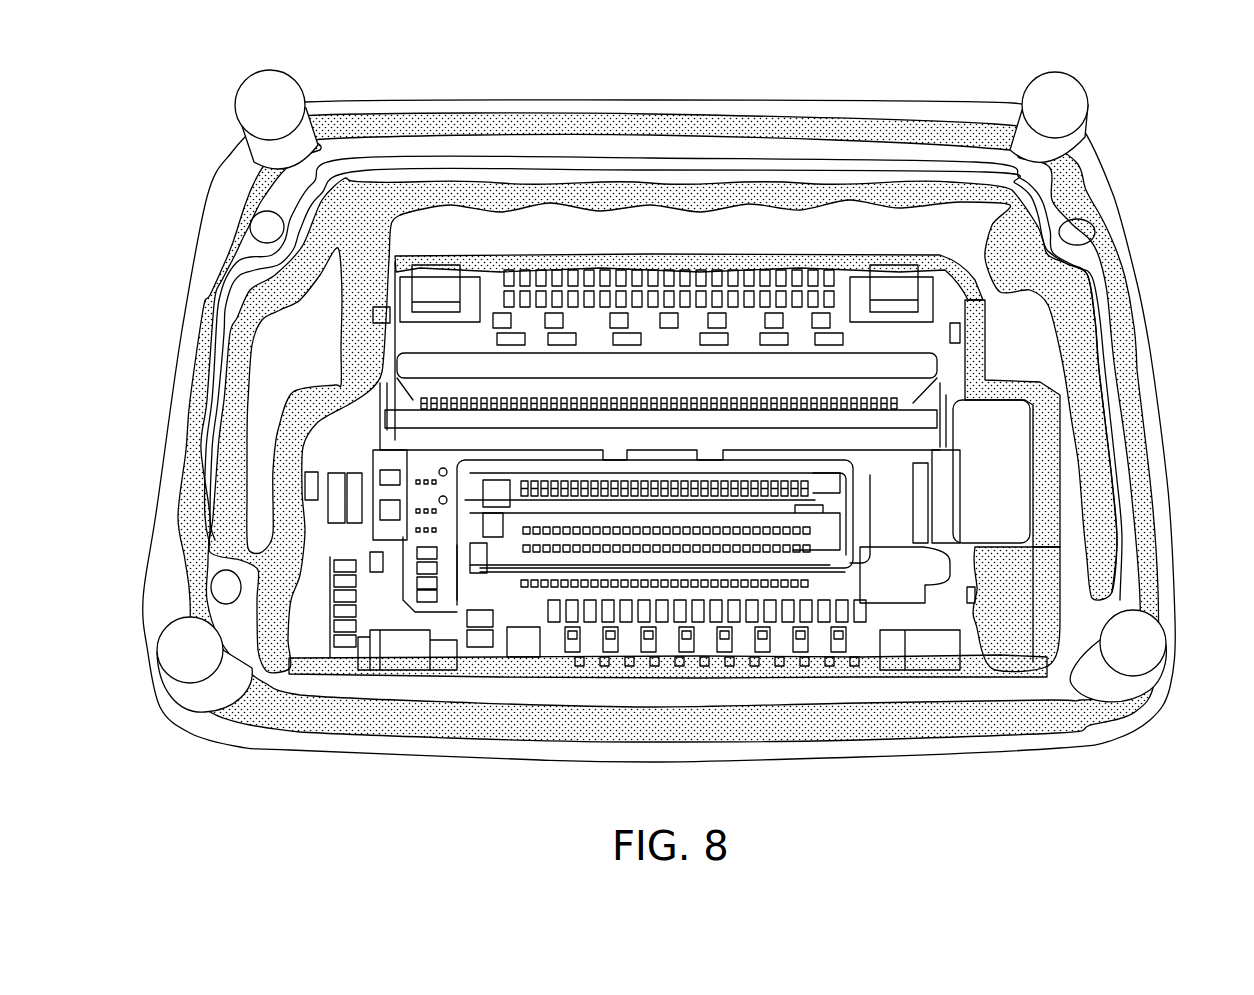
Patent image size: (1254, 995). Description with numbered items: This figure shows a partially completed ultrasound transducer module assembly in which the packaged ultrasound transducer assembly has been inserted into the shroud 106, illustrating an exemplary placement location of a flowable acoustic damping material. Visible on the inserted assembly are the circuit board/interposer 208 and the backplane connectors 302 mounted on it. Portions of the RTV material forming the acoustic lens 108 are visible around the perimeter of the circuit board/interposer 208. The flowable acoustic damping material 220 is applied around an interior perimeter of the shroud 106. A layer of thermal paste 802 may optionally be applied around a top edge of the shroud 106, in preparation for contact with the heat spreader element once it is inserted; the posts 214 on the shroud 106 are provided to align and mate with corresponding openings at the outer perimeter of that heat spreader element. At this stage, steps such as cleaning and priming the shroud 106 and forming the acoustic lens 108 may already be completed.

The shroud 106 is at (235, 176).
The acoustic lens 108 is at (342, 348).
The post 214 is at (1070, 93).
The flowable acoustic damping material 220 is at (393, 193).
The circuit board/interposer 208 is at (343, 438).
The backplane connector 302 is at (765, 392).
The thermal paste 802 is at (345, 718).